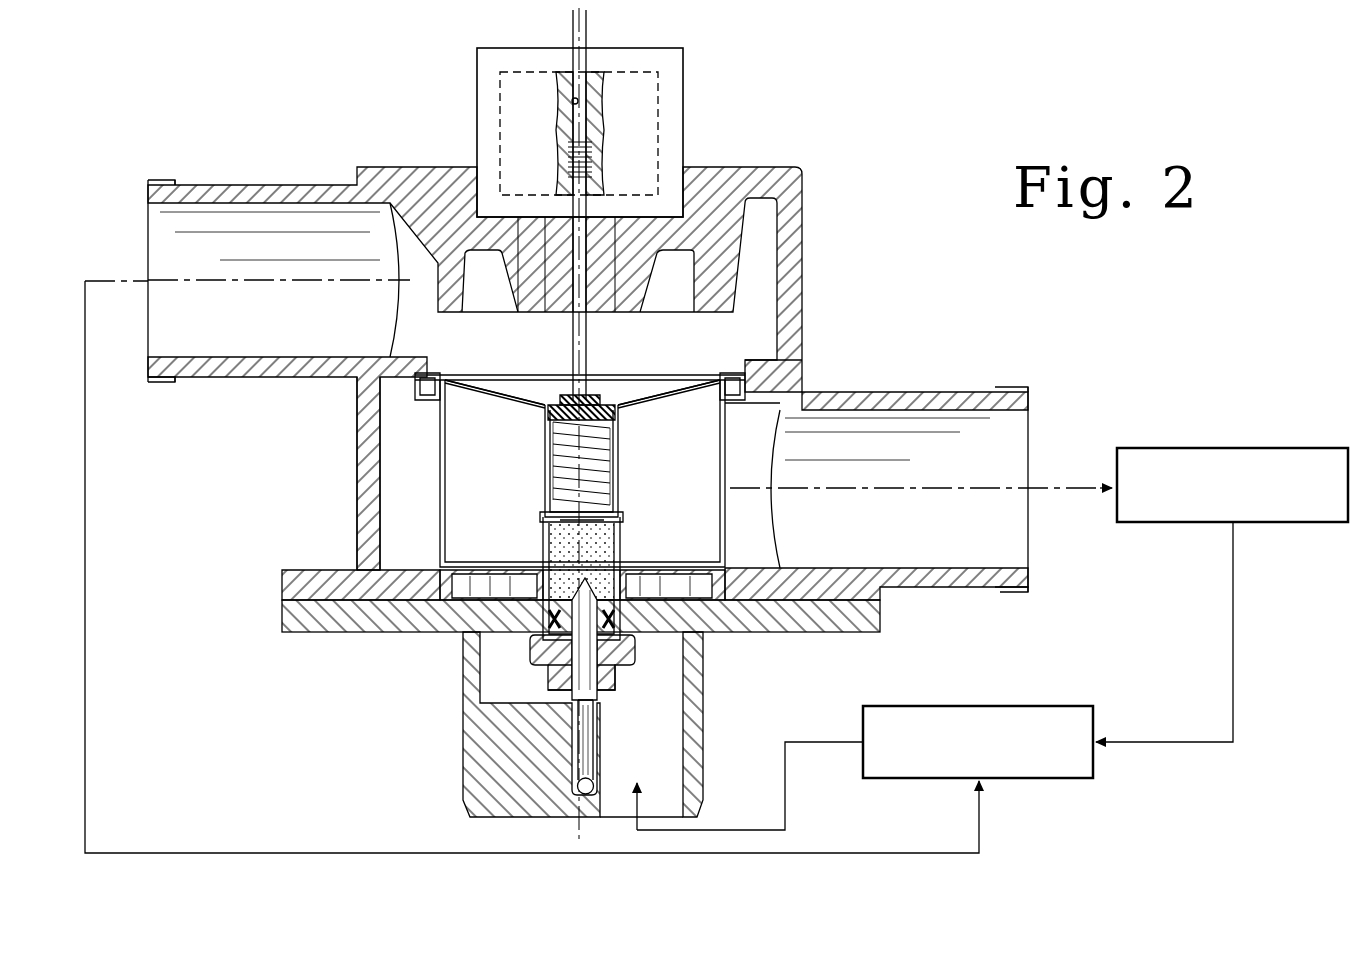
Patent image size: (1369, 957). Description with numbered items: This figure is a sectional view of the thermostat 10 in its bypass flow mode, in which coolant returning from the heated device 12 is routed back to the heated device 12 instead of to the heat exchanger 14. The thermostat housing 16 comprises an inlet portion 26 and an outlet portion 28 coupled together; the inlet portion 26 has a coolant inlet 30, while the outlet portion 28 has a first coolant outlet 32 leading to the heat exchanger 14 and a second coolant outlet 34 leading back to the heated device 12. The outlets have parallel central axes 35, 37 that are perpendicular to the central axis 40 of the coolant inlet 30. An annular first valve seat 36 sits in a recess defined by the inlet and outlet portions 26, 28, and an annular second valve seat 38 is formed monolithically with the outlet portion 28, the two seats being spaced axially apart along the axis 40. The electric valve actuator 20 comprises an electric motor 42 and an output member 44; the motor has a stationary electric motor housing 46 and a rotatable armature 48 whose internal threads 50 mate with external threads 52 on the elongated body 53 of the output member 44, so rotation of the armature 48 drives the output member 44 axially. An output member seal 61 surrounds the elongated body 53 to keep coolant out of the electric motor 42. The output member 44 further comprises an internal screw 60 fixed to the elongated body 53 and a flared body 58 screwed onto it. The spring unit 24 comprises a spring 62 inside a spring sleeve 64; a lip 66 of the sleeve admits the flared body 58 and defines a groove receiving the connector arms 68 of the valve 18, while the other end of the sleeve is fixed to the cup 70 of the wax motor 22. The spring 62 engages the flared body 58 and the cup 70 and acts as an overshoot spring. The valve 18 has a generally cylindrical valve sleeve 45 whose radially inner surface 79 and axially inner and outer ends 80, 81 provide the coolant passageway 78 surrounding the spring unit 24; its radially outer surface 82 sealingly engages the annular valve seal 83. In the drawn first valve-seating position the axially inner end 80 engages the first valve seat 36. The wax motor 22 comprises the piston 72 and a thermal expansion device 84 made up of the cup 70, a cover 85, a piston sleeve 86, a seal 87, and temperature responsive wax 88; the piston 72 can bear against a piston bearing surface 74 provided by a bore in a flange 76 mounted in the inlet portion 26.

The thermostat 10 is at (874, 128).
The heated device 12 is at (1052, 706).
The heat exchanger 14 is at (1300, 447).
The thermostat housing 16 is at (806, 246).
The valve 18 is at (730, 432).
The electric valve actuator 20 is at (686, 118).
The wax motor 22 is at (636, 666).
The spring unit 24 is at (622, 475).
The inlet portion 26 is at (706, 742).
The outlet portion 28 is at (355, 458).
The coolant inlet 30 is at (645, 770).
The first coolant outlet 32 is at (905, 568).
The second coolant outlet 34 is at (222, 352).
The central axis of first coolant outlet 35 is at (920, 485).
The first valve seat 36 is at (728, 565).
The central axis of second coolant outlet 37 is at (305, 285).
The second valve seat 38 is at (712, 318).
The central axis 40 is at (583, 25).
The electric motor 42 is at (686, 70).
The output member 44 is at (590, 332).
The valve sleeve 45 is at (727, 505).
The electric motor housing 46 is at (477, 85).
The rotatable armature 48 is at (660, 148).
The internal threads 50 is at (556, 108).
The external threads 52 is at (603, 158).
The elongated body 53 is at (572, 325).
The flared body 58 is at (602, 382).
The internal screw 60 is at (553, 460).
The output member seal 61 is at (545, 222).
The spring 62 is at (620, 445).
The spring sleeve 64 is at (622, 412).
The lip 66 is at (566, 380).
The connector arms 68 is at (480, 395).
The cup 70 is at (622, 580).
The piston 72 is at (597, 746).
The piston bearing surface 74 is at (592, 800).
The flange 76 is at (478, 702).
The coolant passageway 78 is at (623, 520).
The radially inner surface 79 is at (722, 522).
The axially inner end 80 is at (640, 582).
The axially outer end 81 is at (715, 376).
The radially outer surface 82 is at (432, 455).
The valve seal 83 is at (430, 375).
The thermal expansion device 84 is at (624, 614).
The cover 85 is at (552, 675).
The piston sleeve 86 is at (543, 620).
The seal 87 is at (604, 690).
The temperature responsive wax 88 is at (545, 545).